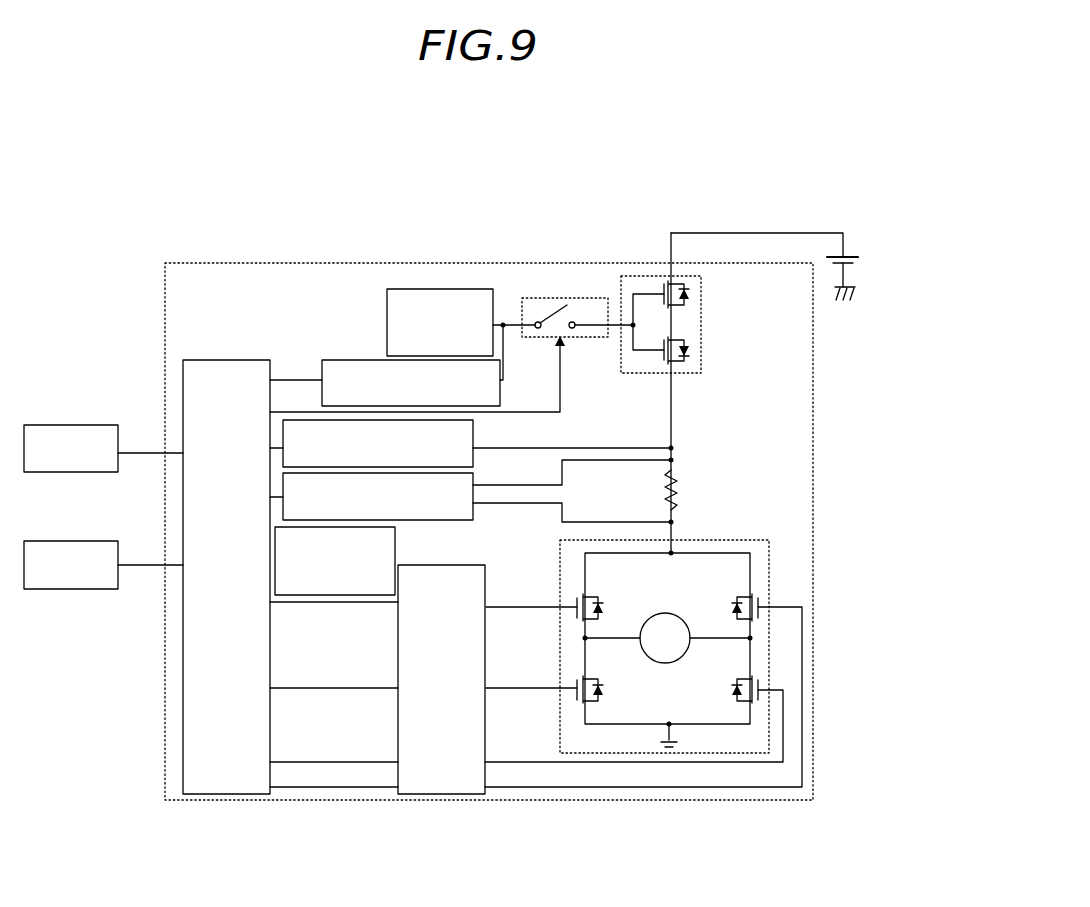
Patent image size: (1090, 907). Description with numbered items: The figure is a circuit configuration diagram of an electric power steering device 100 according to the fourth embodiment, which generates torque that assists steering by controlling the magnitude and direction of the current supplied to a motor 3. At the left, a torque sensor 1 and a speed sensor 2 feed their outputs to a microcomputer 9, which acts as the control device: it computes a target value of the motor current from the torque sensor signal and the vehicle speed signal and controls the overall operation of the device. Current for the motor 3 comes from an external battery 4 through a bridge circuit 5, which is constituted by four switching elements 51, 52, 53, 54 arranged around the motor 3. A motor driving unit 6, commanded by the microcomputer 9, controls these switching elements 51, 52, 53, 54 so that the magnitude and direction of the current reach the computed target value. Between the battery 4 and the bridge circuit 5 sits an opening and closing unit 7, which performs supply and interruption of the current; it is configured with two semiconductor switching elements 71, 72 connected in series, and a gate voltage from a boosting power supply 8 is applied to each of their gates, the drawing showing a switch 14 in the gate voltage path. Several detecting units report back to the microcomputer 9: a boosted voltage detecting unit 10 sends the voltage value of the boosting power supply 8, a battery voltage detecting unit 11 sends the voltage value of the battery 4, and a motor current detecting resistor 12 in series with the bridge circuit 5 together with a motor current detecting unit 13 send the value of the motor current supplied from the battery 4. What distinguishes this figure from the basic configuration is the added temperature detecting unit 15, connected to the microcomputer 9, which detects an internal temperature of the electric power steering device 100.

The electric power steering device 100 is at (515, 263).
The torque sensor 1 is at (70, 425).
The speed sensor 2 is at (70, 541).
The motor 3 is at (683, 618).
The battery 4 is at (852, 257).
The bridge circuit 5 is at (678, 626).
The motor driving unit 6 is at (486, 588).
The opening and closing unit 7 is at (693, 378).
The boosting power supply 8 is at (436, 289).
The microcomputer 9 is at (230, 360).
The boosted voltage detecting unit 10 is at (330, 360).
The battery voltage detecting unit 11 is at (480, 422).
The motor current detecting resistor 12 is at (680, 474).
The motor current detecting unit 13 is at (478, 466).
The switch 14 is at (560, 298).
The temperature detecting unit 15 is at (395, 535).
The switching element 51 is at (578, 618).
The switching element 52 is at (578, 694).
The switching element 53 is at (757, 596).
The switching element 54 is at (760, 678).
The semiconductor switching element 71 is at (668, 280).
The semiconductor switching element 72 is at (665, 366).